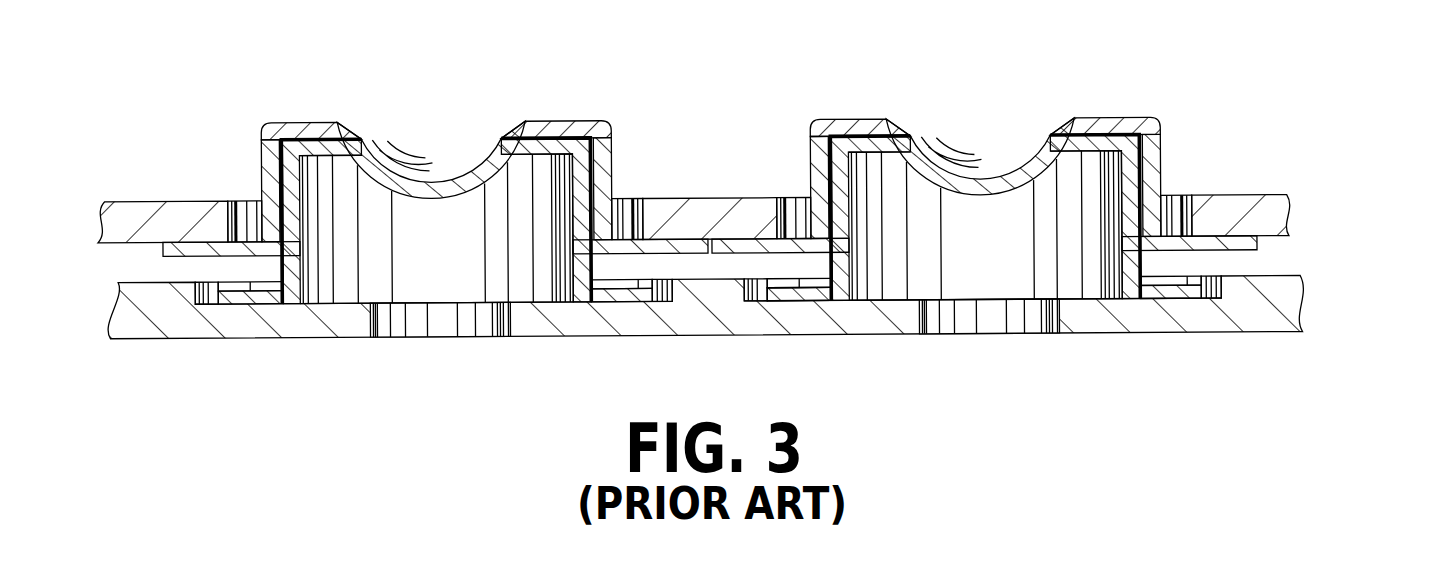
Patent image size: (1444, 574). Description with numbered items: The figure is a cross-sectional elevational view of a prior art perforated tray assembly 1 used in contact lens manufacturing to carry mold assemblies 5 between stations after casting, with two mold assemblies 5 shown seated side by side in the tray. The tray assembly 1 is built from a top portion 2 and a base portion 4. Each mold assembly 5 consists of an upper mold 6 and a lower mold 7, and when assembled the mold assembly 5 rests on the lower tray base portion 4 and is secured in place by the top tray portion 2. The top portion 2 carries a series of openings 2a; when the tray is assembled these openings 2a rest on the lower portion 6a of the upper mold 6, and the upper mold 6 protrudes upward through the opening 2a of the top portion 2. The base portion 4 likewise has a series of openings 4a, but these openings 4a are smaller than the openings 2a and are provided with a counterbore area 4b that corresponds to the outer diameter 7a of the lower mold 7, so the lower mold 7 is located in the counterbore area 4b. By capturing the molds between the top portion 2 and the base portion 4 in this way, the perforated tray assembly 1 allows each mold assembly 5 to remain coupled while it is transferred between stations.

The tray assembly 1 is at (762, 222).
The top portion 2 is at (1240, 193).
The openings 2a is at (245, 200).
The base portion 4 is at (1262, 327).
The openings 4a is at (437, 336).
The counterbore area 4b is at (203, 300).
The mold assembly 5 is at (295, 113).
The upper mold 6 is at (593, 118).
The lower portion of upper mold 6a is at (703, 238).
The lower mold 7 is at (573, 215).
The outer diameter of lower mold 7a is at (757, 302).